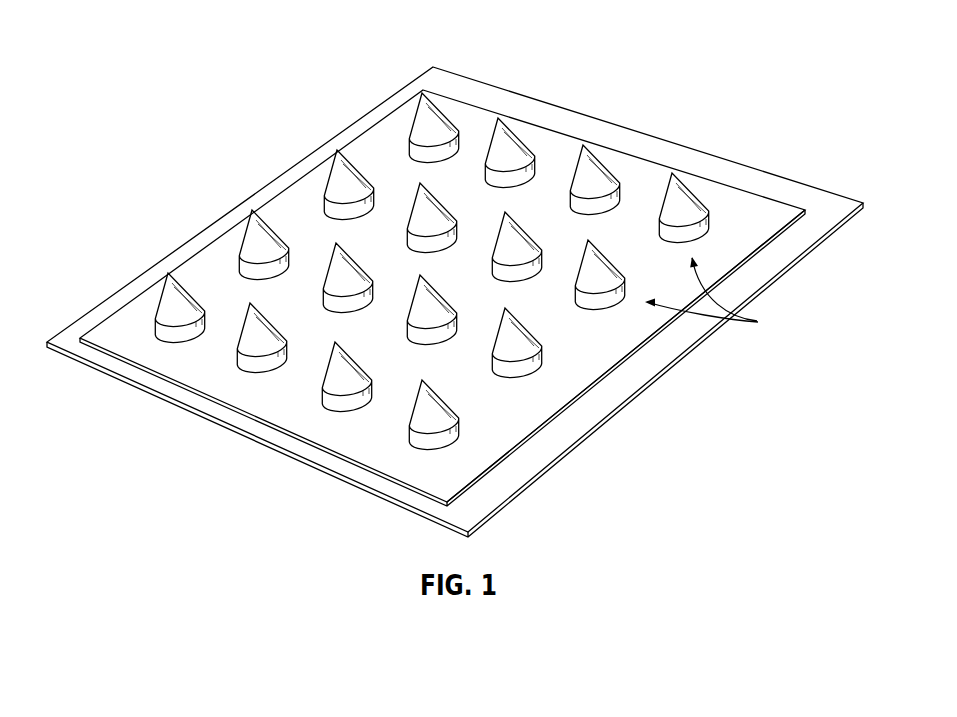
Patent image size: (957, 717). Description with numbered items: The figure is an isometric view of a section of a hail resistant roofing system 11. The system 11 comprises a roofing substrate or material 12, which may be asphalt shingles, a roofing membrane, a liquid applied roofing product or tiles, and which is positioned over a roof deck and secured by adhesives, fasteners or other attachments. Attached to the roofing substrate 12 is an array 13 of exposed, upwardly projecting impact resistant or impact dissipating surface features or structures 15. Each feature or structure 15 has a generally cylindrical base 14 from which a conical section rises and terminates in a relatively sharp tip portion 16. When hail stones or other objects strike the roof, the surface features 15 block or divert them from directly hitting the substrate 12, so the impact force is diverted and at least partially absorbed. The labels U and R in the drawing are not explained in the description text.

The hail resistant roofing system 11 is at (705, 85).
The roofing substrate 12 is at (747, 207).
The array 13 is at (425, 95).
The cylindrical base 14 is at (267, 282).
The impact resistant surface feature 15 is at (716, 298).
The tip portion 16 is at (337, 150).
The upper plate edge U is at (757, 250).
The rear plate edge R is at (703, 335).